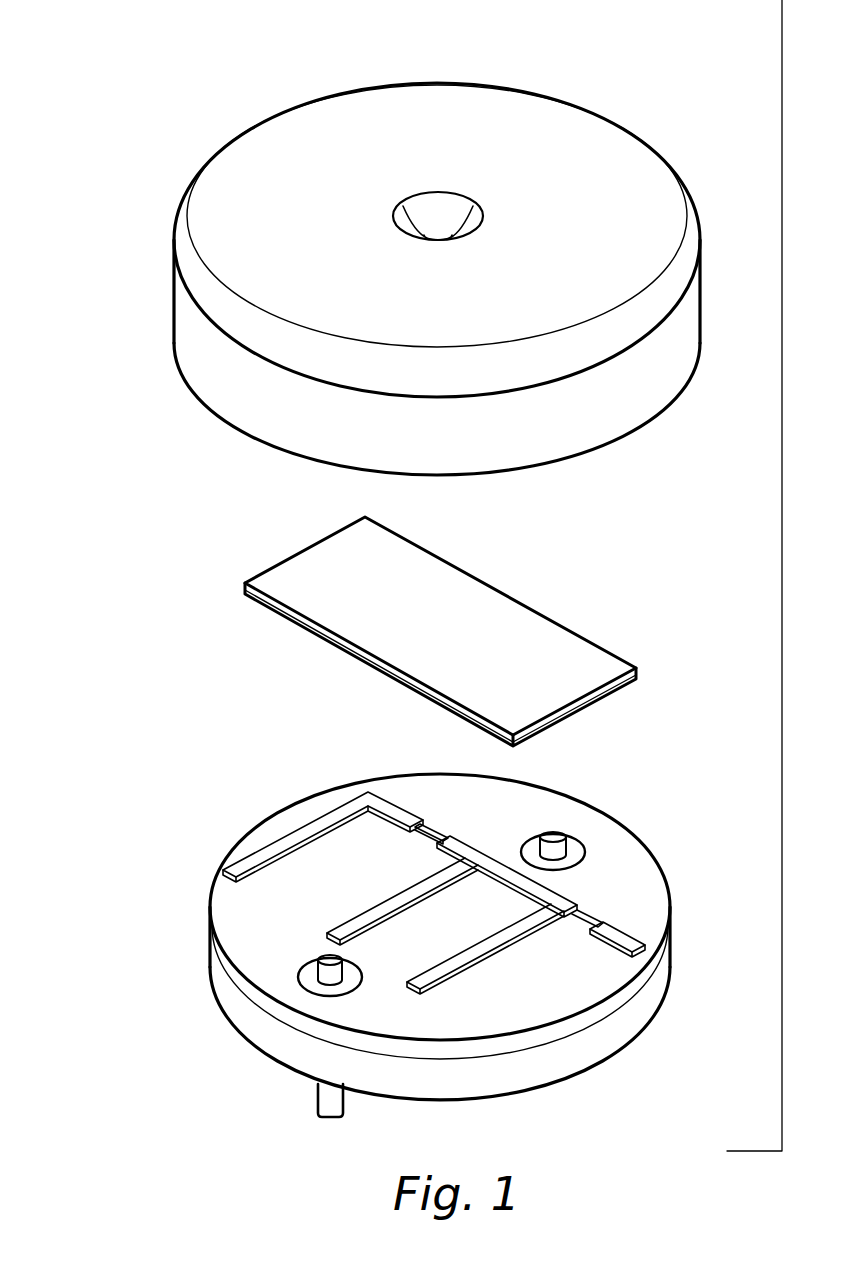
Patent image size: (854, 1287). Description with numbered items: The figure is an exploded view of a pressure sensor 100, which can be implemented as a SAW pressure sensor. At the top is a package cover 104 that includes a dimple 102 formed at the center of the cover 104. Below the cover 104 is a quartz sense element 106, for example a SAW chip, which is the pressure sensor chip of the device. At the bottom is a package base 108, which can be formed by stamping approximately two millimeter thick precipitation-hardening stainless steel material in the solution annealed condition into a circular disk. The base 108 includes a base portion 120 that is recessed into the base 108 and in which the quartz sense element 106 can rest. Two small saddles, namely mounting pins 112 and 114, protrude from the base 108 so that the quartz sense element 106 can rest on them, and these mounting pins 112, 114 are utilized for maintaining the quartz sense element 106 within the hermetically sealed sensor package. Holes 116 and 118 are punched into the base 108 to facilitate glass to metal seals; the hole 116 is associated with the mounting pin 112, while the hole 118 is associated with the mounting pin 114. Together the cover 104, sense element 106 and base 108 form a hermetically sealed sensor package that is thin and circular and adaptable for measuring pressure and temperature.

The pressure sensor 100 is at (664, 90).
The dimple 102 is at (393, 216).
The package cover 104 is at (174, 300).
The quartz sense element 106 is at (300, 571).
The package base 108 is at (633, 910).
The mounting pin 112 is at (300, 990).
The mounting pin 114 is at (555, 834).
The hole 116 is at (300, 946).
The hole 118 is at (575, 852).
The base portion 120 is at (320, 878).